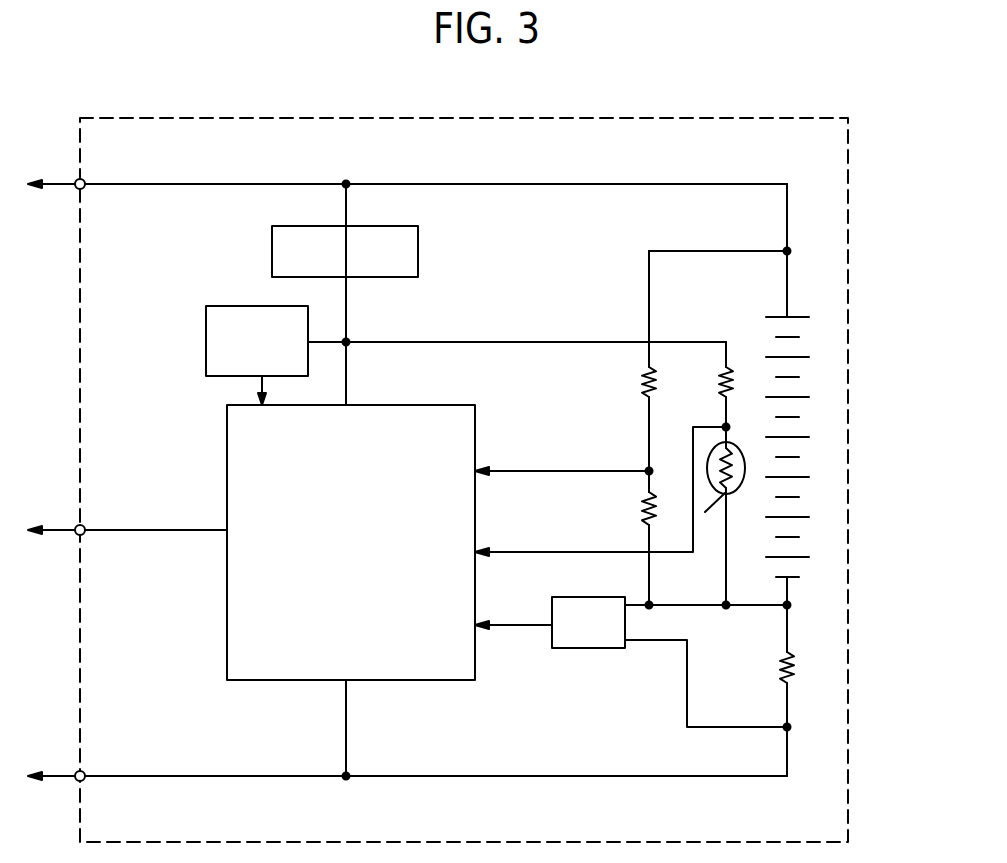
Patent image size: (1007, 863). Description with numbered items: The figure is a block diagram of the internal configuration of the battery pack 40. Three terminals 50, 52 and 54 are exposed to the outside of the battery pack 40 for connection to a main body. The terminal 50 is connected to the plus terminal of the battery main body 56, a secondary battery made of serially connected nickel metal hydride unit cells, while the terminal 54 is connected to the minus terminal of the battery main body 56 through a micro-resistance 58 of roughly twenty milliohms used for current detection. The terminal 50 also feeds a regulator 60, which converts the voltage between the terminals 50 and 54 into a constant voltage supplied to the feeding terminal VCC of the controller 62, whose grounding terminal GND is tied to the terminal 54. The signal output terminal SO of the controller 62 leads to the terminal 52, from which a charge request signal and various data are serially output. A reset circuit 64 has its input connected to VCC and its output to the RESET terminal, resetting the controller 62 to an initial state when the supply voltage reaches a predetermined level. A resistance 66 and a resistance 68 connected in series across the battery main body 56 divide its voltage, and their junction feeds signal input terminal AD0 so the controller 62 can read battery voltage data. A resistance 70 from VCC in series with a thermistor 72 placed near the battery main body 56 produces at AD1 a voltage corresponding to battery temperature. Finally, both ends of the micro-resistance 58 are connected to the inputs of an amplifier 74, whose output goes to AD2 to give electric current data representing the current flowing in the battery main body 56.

The battery pack 40 is at (852, 228).
The terminal 50 is at (78, 180).
The terminal 52 is at (78, 527).
The terminal 54 is at (78, 774).
The battery main body 56 is at (818, 381).
The micro-resistance 58 is at (798, 662).
The regulator 60 is at (272, 247).
The controller 62 is at (227, 455).
The reset circuit 64 is at (229, 304).
The resistance 66 is at (643, 387).
The resistance 68 is at (639, 512).
The resistance 70 is at (717, 387).
The thermistor 72 is at (723, 523).
The amplifier 74 is at (598, 648).